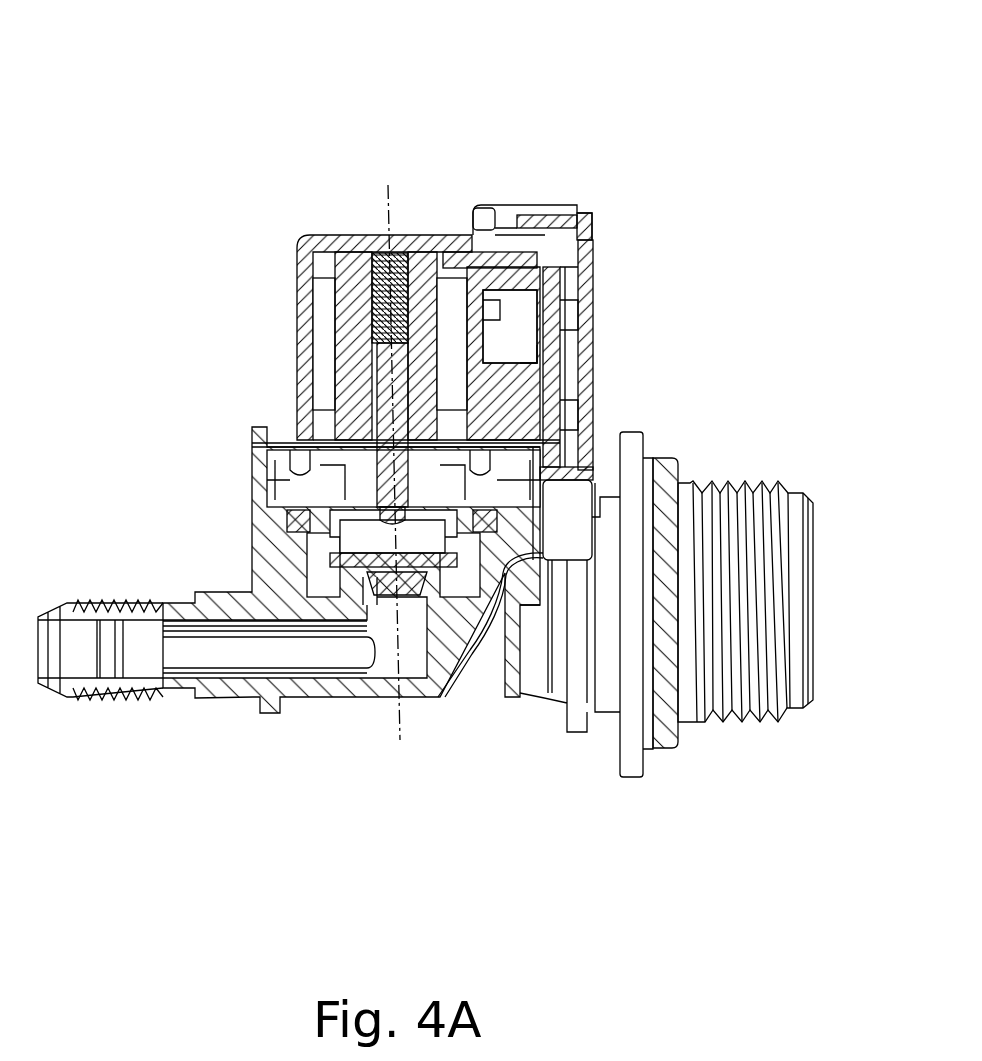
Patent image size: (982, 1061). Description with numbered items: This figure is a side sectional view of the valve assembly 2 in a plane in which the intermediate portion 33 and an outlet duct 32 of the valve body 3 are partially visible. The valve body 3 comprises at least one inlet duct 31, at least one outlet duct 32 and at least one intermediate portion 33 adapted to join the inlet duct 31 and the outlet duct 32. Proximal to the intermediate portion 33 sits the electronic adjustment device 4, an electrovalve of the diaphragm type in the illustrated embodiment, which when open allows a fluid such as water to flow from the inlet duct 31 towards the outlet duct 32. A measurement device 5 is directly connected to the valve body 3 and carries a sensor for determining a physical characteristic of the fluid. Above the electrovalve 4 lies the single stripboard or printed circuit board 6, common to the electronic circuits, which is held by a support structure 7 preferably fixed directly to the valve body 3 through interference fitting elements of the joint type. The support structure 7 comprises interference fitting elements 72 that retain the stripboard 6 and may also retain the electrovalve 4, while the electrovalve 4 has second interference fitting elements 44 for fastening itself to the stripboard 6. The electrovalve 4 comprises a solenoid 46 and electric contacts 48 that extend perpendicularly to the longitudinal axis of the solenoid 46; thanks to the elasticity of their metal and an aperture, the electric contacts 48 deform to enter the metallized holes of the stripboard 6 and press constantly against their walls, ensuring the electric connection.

The valve assembly 2 is at (225, 100).
The valve body 3 is at (547, 878).
The electronic adjustment device 4 is at (217, 343).
The measurement device 5 is at (609, 345).
The stripboard or printed circuit board 6 is at (548, 240).
The support structure 7 is at (593, 247).
The inlet duct 31 is at (833, 464).
The outlet duct 32 is at (58, 569).
The intermediate portion 33 is at (413, 738).
The second interference fitting elements 44 is at (472, 243).
The solenoid 46 is at (303, 312).
The electric contacts 48 is at (543, 257).
The interference fitting elements 72 is at (477, 213).